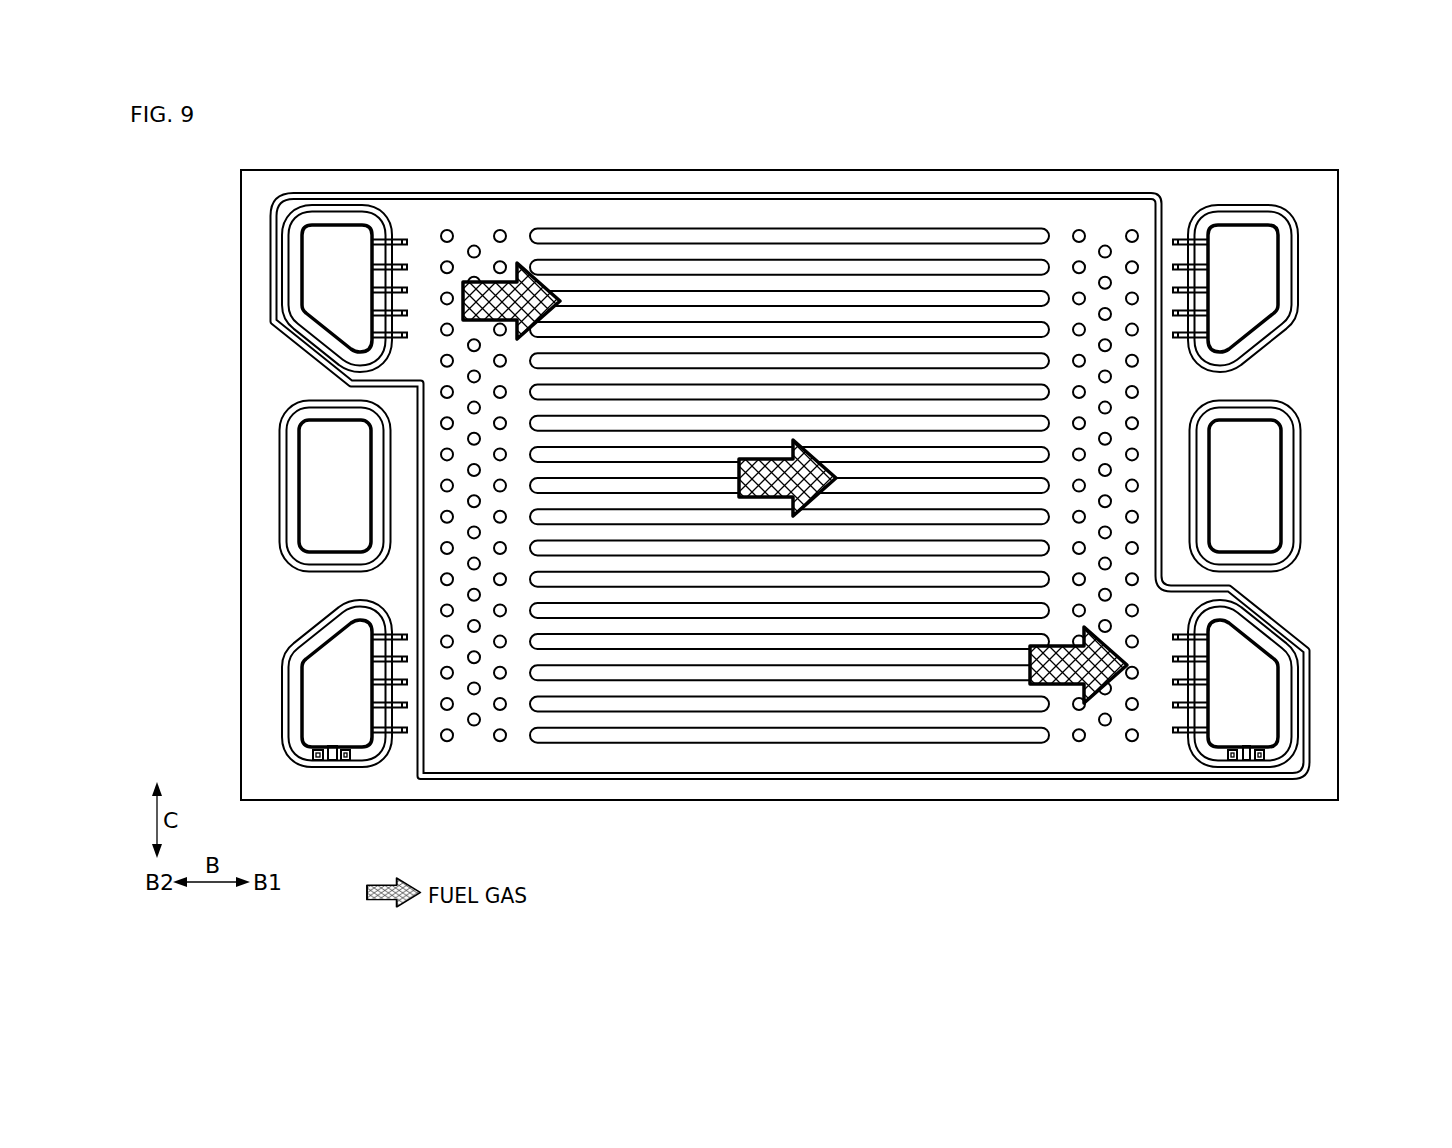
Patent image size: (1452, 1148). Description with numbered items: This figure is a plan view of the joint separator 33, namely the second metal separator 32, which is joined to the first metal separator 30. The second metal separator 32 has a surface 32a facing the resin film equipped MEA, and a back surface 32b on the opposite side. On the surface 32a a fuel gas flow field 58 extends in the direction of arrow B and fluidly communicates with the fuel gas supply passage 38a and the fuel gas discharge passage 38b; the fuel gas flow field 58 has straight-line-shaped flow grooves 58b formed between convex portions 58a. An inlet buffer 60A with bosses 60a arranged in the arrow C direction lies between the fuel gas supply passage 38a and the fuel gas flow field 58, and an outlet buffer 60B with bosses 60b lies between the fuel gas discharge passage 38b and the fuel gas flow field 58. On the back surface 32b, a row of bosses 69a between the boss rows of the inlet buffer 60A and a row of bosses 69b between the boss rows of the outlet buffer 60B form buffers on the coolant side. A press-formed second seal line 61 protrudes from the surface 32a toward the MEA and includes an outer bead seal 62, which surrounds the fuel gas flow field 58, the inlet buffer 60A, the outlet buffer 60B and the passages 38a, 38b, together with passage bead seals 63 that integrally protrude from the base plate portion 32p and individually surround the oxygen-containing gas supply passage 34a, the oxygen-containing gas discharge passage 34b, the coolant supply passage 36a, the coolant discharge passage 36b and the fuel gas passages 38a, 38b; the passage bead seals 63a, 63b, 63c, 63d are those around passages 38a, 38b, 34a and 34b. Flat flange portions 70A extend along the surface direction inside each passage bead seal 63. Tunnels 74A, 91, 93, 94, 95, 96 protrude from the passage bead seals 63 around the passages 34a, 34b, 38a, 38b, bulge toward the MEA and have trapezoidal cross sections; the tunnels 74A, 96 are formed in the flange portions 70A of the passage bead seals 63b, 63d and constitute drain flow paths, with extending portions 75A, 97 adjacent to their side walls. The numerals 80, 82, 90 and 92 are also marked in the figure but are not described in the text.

The first metal separator 30 is at (789, 454).
The second metal separator 32 is at (856, 170).
The surface 32a is at (580, 790).
The back surface 32b is at (626, 785).
The base plate portion 32p is at (278, 614).
The joint separator 33 is at (807, 449).
The oxygen-containing gas supply passage 34a is at (1258, 318).
The oxygen-containing gas discharge passage 34b is at (318, 655).
The coolant supply passage 36a is at (1280, 440).
The coolant discharge passage 36b is at (318, 505).
The fuel gas supply passage 38a is at (318, 310).
The fuel gas discharge passage 38b is at (1243, 655).
The fuel gas flow field 58 is at (789, 416).
The convex portions 58a is at (711, 267).
The straight-line-shaped flow grooves 58b is at (779, 252).
The inlet buffer 60A is at (484, 483).
The outlet buffer 60B is at (1094, 475).
The bosses 60a is at (447, 229).
The bosses 60b is at (1079, 229).
The second seal line 61 is at (790, 524).
The outer bead seal 62 is at (715, 772).
The passage bead seals 63 is at (786, 501).
The passage bead seal 63a is at (271, 260).
The passage bead seal 63b is at (1296, 732).
The passage bead seal 63c is at (1311, 222).
The passage bead seal 63d is at (278, 730).
The bosses 69a is at (474, 722).
The bosses 69b is at (1105, 722).
The flat flange portions 70A is at (315, 440).
The tunnel 74A is at (290, 791).
The extending portion 75A is at (313, 754).
The supply hole 80 is at (1208, 228).
The discharge hole 82 is at (369, 752).
The fuel gas flow direction 90 is at (350, 275).
The tunnel 91 is at (405, 242).
The fuel gas flow direction 92 is at (1222, 695).
The tunnel 93 is at (1200, 682).
The tunnel 94 is at (1179, 242).
The tunnel 95 is at (383, 706).
The tunnel 96 is at (1257, 761).
The extending portion 97 is at (1265, 755).